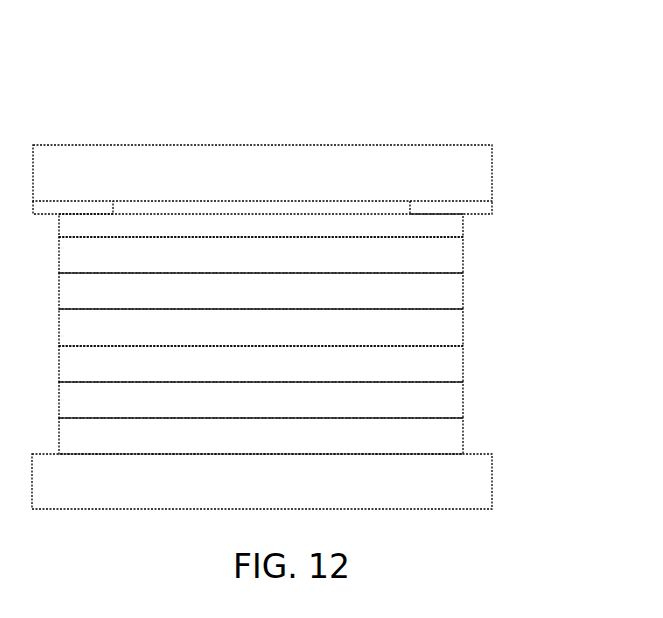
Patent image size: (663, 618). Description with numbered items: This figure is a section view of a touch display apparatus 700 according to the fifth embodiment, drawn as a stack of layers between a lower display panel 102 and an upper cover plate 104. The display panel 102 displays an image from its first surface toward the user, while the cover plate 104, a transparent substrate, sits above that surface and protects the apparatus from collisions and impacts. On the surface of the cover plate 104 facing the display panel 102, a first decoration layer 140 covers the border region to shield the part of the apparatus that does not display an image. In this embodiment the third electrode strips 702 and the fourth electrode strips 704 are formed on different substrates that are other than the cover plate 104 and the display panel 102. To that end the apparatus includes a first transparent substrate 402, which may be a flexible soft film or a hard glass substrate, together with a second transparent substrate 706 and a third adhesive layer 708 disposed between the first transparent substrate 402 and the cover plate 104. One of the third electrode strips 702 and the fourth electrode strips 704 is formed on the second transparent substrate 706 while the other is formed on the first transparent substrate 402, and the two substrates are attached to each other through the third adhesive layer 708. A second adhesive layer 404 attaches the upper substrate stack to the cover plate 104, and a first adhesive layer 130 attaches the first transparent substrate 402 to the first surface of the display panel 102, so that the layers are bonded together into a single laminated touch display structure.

The touch display apparatus 700 is at (480, 86).
The cover plate 104 is at (478, 173).
The first decoration layer 140 is at (483, 209).
The second adhesive layer 404 is at (457, 222).
The second transparent substrate 706 is at (458, 256).
The third electrode strips 702 is at (452, 293).
The third adhesive layer 708 is at (448, 327).
The fourth electrode strips 704 is at (448, 362).
The first transparent substrate 402 is at (447, 399).
The first adhesive layer 130 is at (448, 436).
The display panel 102 is at (478, 480).